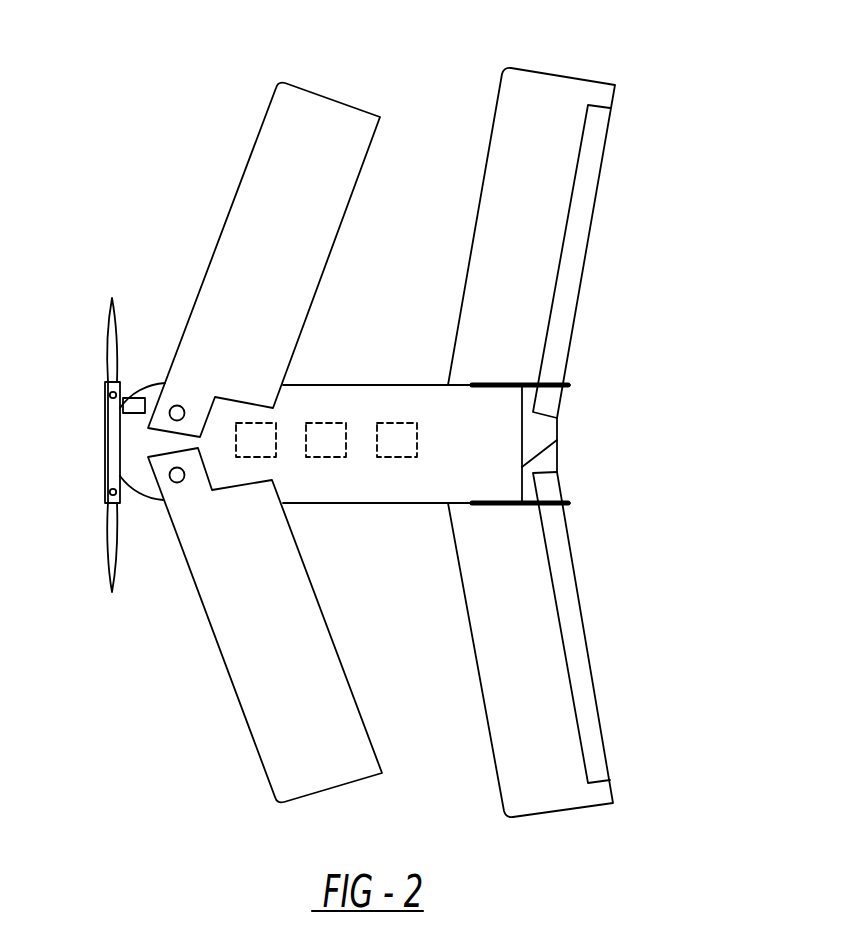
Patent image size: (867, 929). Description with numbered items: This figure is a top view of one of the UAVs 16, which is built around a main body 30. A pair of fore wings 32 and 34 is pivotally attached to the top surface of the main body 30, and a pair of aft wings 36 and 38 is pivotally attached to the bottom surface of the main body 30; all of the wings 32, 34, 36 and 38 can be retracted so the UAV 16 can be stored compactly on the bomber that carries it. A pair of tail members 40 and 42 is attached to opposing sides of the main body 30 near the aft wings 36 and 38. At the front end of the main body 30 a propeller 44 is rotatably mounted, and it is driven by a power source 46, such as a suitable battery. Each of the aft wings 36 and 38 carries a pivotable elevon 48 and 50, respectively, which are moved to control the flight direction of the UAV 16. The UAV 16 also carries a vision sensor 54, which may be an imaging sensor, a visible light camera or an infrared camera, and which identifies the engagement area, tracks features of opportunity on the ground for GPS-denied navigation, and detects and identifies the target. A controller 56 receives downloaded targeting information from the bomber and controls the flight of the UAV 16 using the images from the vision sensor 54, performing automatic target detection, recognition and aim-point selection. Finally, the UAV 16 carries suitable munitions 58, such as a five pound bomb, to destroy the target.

The UAV 16 is at (680, 84).
The main body 30 is at (380, 395).
The fore wing 32 is at (328, 115).
The fore wing 34 is at (278, 742).
The aft wing 36 is at (553, 97).
The aft wing 38 is at (550, 795).
The tail member 40 is at (503, 383).
The tail member 42 is at (510, 503).
The propeller 44 is at (107, 440).
The power source 46 is at (400, 443).
The elevon 48 is at (580, 202).
The elevon 50 is at (590, 703).
The vision sensor 54 is at (133, 400).
The controller 56 is at (252, 437).
The munitions 58 is at (332, 445).